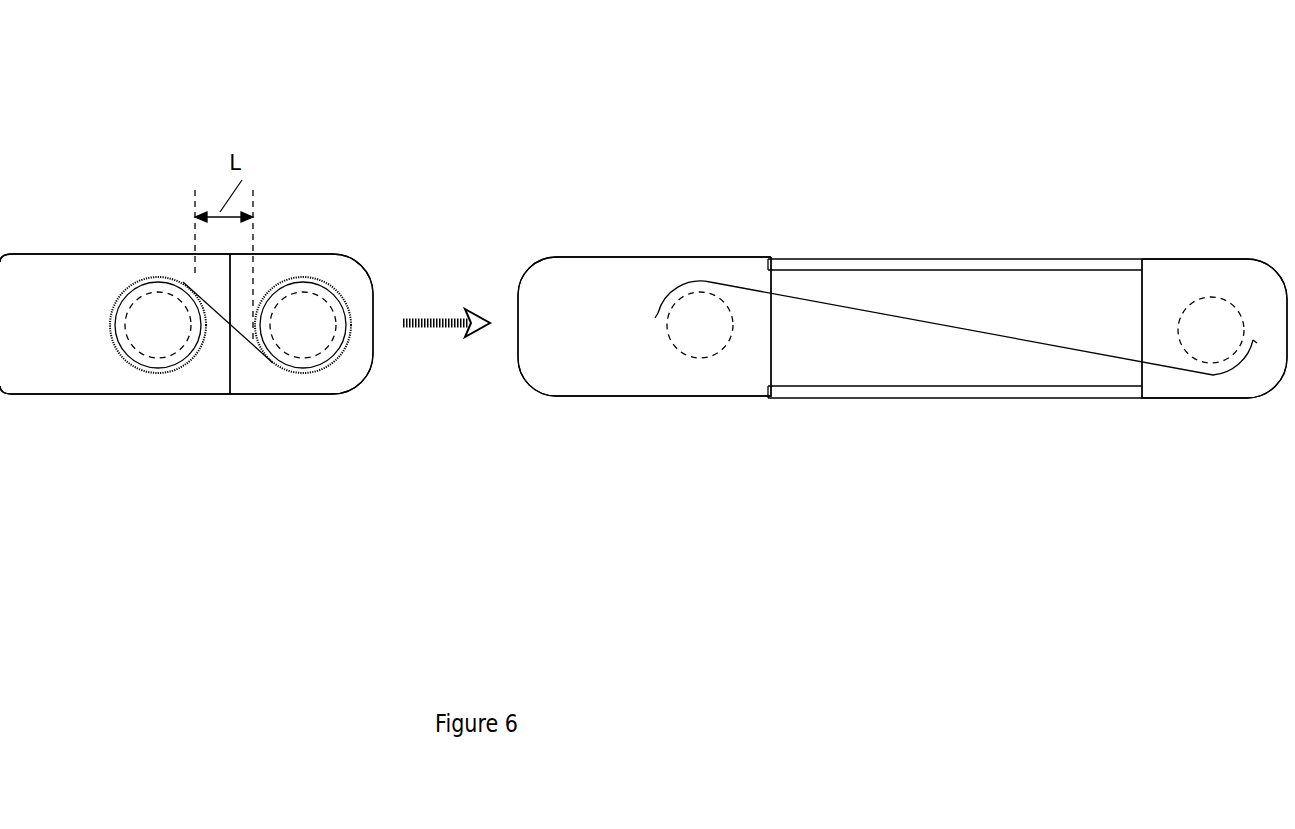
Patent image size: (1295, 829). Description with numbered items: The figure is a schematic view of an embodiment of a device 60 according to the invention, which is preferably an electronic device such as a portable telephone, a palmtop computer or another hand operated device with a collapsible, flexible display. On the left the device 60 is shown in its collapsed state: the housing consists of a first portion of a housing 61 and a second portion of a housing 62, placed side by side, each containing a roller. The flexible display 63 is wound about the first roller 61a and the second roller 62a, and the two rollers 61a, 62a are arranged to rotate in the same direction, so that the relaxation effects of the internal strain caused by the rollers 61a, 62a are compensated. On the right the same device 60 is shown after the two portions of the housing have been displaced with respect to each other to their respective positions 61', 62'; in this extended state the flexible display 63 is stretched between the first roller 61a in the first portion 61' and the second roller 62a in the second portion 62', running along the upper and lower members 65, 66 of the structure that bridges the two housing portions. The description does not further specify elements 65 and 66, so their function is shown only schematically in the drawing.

The device 60 is at (323, 103).
The first portion of a housing 61 is at (115, 296).
The second portion of a housing 62 is at (301, 296).
The first roller 61a is at (148, 342).
The second roller 62a is at (308, 353).
The flexible display 63 is at (158, 377).
The position of the first housing portion 61' is at (644, 303).
The position of the second housing portion 62' is at (1214, 300).
The upper guide rail 65 is at (930, 258).
The lower guide rail 66 is at (917, 398).